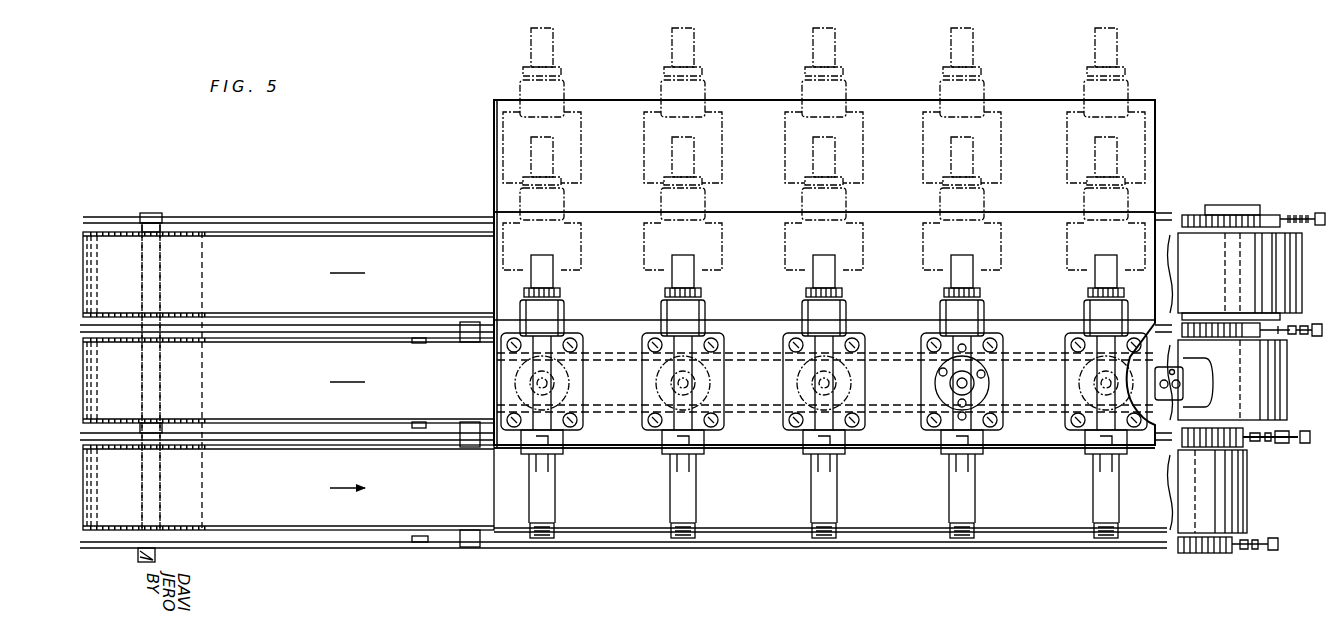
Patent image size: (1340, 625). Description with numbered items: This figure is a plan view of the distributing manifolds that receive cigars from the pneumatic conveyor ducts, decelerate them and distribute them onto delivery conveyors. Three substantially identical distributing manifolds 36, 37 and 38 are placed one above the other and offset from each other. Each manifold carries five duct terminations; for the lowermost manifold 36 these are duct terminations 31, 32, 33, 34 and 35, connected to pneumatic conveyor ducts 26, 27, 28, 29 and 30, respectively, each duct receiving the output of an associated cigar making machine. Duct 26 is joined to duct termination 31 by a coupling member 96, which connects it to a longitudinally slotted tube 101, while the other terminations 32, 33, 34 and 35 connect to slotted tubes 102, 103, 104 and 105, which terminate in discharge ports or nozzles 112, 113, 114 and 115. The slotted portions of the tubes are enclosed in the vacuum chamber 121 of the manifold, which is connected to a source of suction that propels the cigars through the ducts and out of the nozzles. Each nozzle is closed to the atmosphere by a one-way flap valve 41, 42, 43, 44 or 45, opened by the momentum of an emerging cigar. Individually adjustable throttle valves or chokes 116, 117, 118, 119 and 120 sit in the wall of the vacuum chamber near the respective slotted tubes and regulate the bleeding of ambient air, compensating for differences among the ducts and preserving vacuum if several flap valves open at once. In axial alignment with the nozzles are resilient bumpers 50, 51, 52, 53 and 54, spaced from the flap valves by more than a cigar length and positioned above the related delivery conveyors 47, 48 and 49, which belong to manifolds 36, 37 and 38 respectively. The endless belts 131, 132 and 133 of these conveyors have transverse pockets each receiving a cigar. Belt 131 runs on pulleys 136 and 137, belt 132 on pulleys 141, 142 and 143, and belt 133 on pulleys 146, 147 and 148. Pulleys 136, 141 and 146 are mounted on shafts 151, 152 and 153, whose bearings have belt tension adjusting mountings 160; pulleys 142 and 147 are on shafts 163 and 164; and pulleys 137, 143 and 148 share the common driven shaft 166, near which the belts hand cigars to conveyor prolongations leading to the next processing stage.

The pneumatic conveyor duct 26 is at (564, 273).
The pneumatic conveyor duct 27 is at (705, 273).
The pneumatic conveyor duct 28 is at (844, 273).
The pneumatic conveyor duct 29 is at (982, 273).
The pneumatic conveyor duct 30 is at (1094, 260).
The duct termination 31 is at (531, 307).
The duct termination 32 is at (665, 305).
The duct termination 33 is at (803, 305).
The duct termination 34 is at (947, 309).
The duct termination 35 is at (1091, 304).
The distributing manifold 36 is at (503, 163).
The distributing manifold 37 is at (498, 257).
The distributing manifold 38 is at (507, 453).
The one-way flap valve 41 is at (563, 488).
The one-way flap valve 42 is at (704, 488).
The one-way flap valve 43 is at (844, 488).
The one-way flap valve 44 is at (981, 488).
The one-way flap valve 45 is at (1082, 488).
The delivery conveyor 47 is at (348, 228).
The delivery conveyor 48 is at (333, 422).
The delivery conveyor 49 is at (363, 532).
The resilient bumper 50 is at (556, 553).
The resilient bumper 51 is at (685, 553).
The resilient bumper 52 is at (831, 553).
The resilient bumper 53 is at (967, 553).
The resilient bumper 54 is at (1104, 553).
The coupling member 96 is at (560, 301).
The longitudinally slotted tube 101 is at (515, 358).
The slotted tube 102 is at (671, 364).
The slotted tube 103 is at (807, 364).
The slotted tube 104 is at (950, 364).
The slotted tube 105 is at (1087, 362).
The discharge port or nozzle 112 is at (706, 454).
The discharge port or nozzle 113 is at (845, 453).
The discharge port or nozzle 114 is at (985, 453).
The discharge port or nozzle 115 is at (1123, 453).
The throttle valve or choke 116 is at (506, 383).
The throttle valve or choke 117 is at (655, 383).
The throttle valve or choke 118 is at (796, 383).
The throttle valve or choke 119 is at (938, 382).
The throttle valve or choke 120 is at (1075, 383).
The vacuum chamber 121 is at (610, 407).
The endless belt 131 is at (285, 243).
The endless belt 132 is at (252, 350).
The endless belt 133 is at (303, 522).
The pulley 136 is at (1300, 215).
The pulley 137 is at (207, 232).
The pulley 141 is at (1270, 432).
The pulley 142 is at (413, 425).
The pulley 143 is at (210, 423).
The pulley 146 is at (1236, 550).
The pulley 147 is at (428, 544).
The pulley 148 is at (205, 532).
The shaft 151 is at (1240, 257).
The shaft 152 is at (1227, 393).
The shaft 153 is at (1213, 543).
The belt tension adjusting mounting 160 is at (1253, 443).
The shaft 163 is at (467, 337).
The shaft 164 is at (478, 548).
The shaft 166 is at (150, 213).